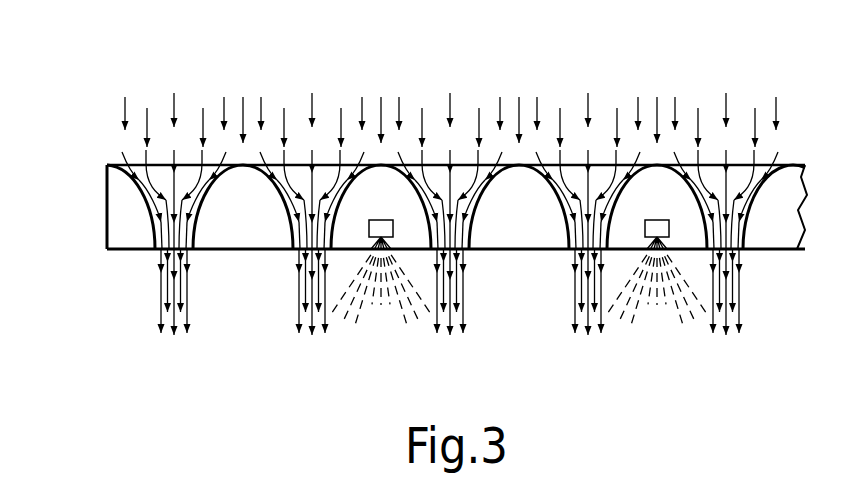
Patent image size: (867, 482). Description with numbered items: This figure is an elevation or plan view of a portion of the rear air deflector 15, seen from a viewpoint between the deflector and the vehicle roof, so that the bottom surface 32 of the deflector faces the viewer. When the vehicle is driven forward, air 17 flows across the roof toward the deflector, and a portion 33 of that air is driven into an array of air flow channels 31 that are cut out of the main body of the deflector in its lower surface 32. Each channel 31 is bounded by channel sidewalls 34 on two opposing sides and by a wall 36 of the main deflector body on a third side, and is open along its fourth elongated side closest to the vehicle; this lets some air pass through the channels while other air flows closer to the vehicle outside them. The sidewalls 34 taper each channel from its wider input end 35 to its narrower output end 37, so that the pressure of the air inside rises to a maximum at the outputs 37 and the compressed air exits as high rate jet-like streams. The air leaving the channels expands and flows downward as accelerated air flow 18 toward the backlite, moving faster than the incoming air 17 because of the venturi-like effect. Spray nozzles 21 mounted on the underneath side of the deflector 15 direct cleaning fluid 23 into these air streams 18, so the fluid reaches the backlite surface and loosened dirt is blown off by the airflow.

The rear air deflector 15 is at (238, 312).
The air flowing across the roof 17 is at (233, 110).
The downward air flow 18 is at (167, 287).
The spray nozzle 21 is at (386, 218).
The cleaning fluid 23 is at (390, 288).
The air flow channel 31 is at (157, 197).
The bottom surface of the deflector 32 is at (112, 238).
The portion of air 33 is at (188, 264).
The channel sidewall 34 is at (472, 188).
The channel input end 35 is at (128, 166).
The wall of the main deflector body 36 is at (323, 173).
The channel output end 37 is at (156, 259).